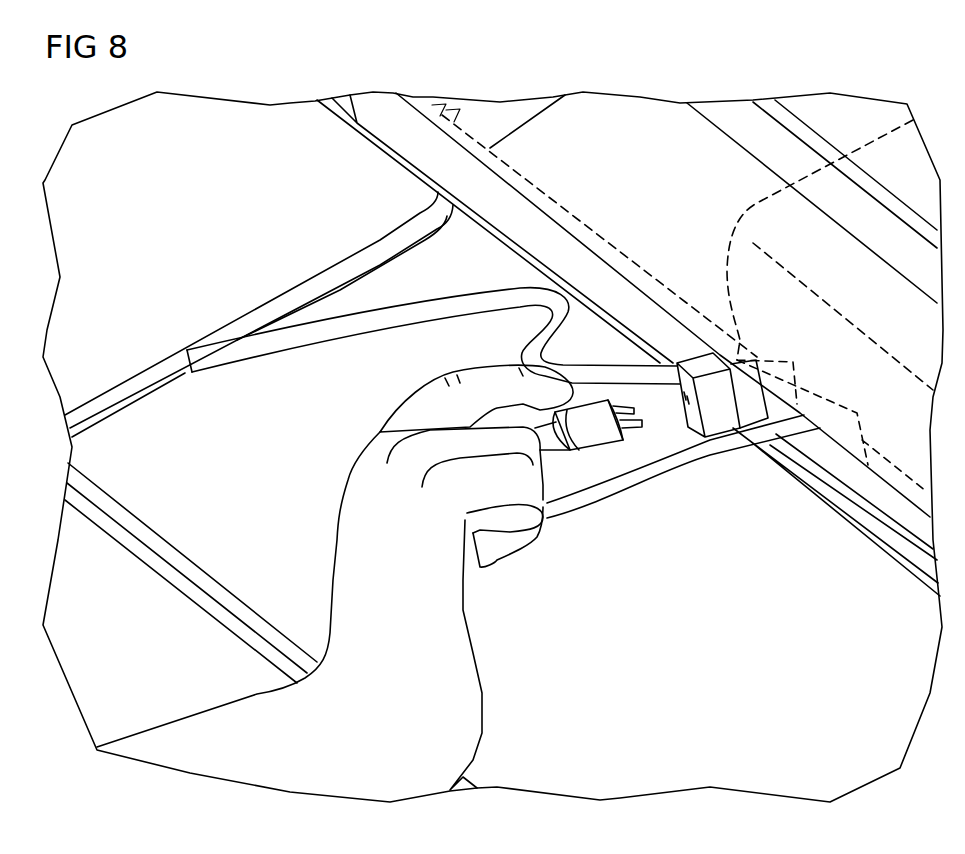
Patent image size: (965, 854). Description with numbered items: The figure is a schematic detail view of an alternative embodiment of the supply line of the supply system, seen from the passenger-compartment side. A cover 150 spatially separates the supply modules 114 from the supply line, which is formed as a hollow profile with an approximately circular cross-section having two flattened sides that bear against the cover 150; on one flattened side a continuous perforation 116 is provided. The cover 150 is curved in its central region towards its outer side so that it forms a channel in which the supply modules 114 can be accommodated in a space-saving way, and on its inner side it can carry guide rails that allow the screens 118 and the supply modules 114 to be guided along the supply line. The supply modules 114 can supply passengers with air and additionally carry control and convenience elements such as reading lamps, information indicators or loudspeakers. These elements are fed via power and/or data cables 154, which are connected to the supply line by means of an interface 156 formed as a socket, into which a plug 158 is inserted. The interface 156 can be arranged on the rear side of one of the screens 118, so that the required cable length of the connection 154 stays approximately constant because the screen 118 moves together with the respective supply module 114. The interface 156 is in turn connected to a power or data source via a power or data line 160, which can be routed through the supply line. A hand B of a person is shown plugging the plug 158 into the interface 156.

The cover 150 is at (552, 137).
The screen 118 is at (560, 252).
The supply module 114 is at (772, 218).
The continuous perforation 116 is at (865, 503).
The interface 156 is at (717, 410).
The plug 158 is at (597, 437).
The power and/or data cable 154 is at (652, 472).
The power or data line 160 is at (308, 337).
The hand of operator B is at (463, 695).